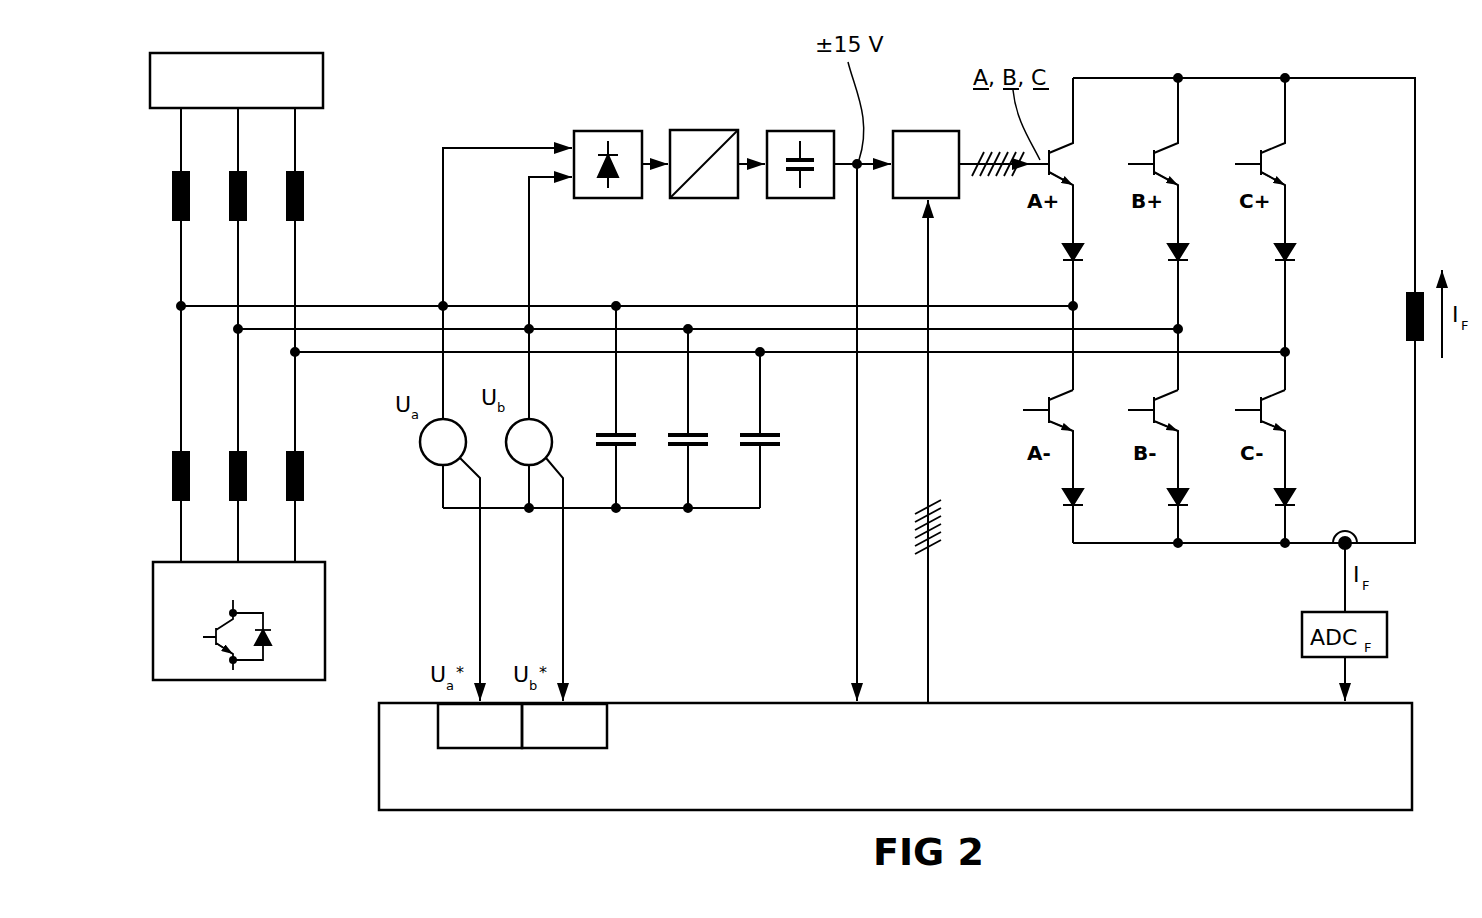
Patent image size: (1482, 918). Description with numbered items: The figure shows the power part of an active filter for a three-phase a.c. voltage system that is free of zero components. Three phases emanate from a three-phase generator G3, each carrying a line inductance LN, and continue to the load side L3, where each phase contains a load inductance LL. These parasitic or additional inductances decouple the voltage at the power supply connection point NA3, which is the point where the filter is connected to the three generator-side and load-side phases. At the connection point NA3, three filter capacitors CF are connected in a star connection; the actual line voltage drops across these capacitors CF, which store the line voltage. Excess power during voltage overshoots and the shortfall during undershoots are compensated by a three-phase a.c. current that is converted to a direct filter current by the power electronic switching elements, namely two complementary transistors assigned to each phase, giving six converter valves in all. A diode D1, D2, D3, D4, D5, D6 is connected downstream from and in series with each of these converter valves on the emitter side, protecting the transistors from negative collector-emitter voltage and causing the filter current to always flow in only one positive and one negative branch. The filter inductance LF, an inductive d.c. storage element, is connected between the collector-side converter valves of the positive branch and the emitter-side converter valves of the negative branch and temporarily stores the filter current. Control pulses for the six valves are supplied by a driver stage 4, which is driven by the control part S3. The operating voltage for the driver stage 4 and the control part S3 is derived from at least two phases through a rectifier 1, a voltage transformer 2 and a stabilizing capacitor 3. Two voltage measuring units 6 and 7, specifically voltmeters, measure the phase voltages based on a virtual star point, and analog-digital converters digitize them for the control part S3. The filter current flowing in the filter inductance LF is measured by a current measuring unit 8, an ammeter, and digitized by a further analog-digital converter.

The rectifier 1 is at (598, 131).
The voltage transformer 2 is at (690, 130).
The stabilizing capacitor 3 is at (790, 131).
The driver stage 4 is at (918, 131).
The voltage measuring unit 6 is at (432, 463).
The voltage measuring unit 7 is at (518, 463).
The current measuring unit 8 is at (1357, 538).
The three-phase generator G3 is at (323, 80).
The load side L3 is at (325, 630).
The control part S3 is at (1082, 703).
The power supply connection point NA3 is at (181, 306).
The line inductance LN is at (287, 200).
The load inductance LL is at (287, 472).
The filter inductance LF is at (1407, 318).
The filter capacitor CF is at (752, 433).
The diode D1 is at (1083, 252).
The diode D2 is at (1083, 497).
The diode D3 is at (1188, 252).
The diode D4 is at (1188, 497).
The diode D5 is at (1295, 252).
The diode D6 is at (1295, 497).